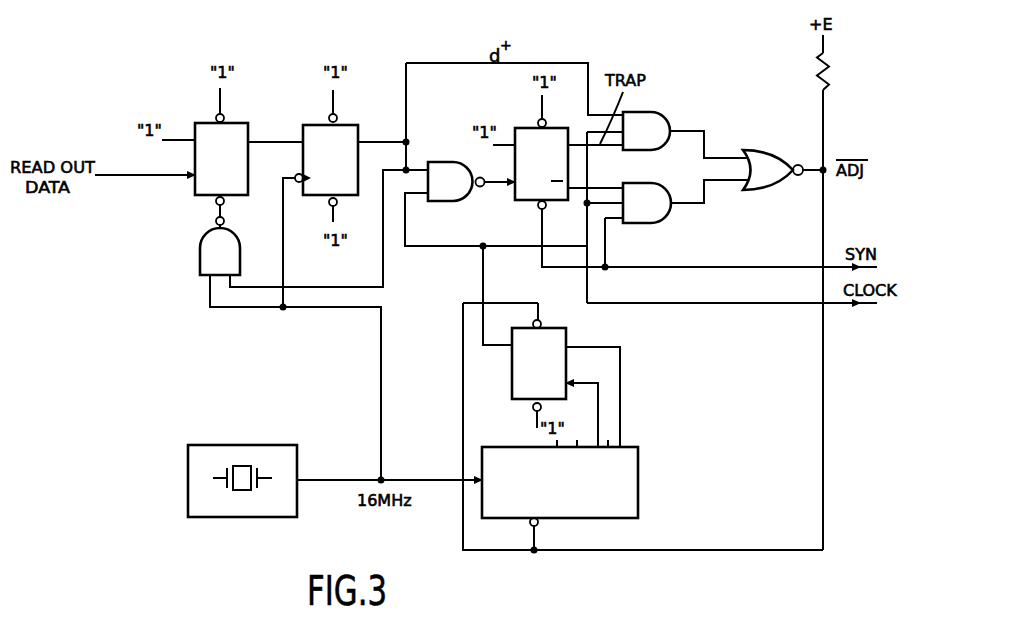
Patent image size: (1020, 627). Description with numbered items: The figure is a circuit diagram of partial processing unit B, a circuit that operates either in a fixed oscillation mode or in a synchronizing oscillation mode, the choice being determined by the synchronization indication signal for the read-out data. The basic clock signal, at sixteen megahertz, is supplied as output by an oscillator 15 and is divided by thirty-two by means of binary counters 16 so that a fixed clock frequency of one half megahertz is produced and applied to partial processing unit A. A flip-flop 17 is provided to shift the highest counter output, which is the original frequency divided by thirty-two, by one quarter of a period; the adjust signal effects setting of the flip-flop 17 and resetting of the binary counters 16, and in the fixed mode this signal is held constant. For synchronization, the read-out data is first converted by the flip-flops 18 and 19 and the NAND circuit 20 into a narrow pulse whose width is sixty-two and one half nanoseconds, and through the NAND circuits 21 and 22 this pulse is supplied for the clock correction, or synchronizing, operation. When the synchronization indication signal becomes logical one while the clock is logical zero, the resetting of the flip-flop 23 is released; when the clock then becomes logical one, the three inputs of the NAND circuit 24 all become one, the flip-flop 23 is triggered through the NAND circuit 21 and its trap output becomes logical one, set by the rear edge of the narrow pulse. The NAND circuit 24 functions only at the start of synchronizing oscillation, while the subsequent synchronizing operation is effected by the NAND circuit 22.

The oscillator 15 is at (266, 447).
The binary counters 16 is at (638, 488).
The flip-flop 17 is at (512, 380).
The flip-flop 18 is at (248, 125).
The flip-flop 19 is at (350, 126).
The NAND circuit 20 is at (200, 242).
The NAND circuit 21 is at (452, 186).
The NAND circuit 22 is at (660, 122).
The flip-flop 23 is at (522, 128).
The NAND circuit 24 is at (660, 196).